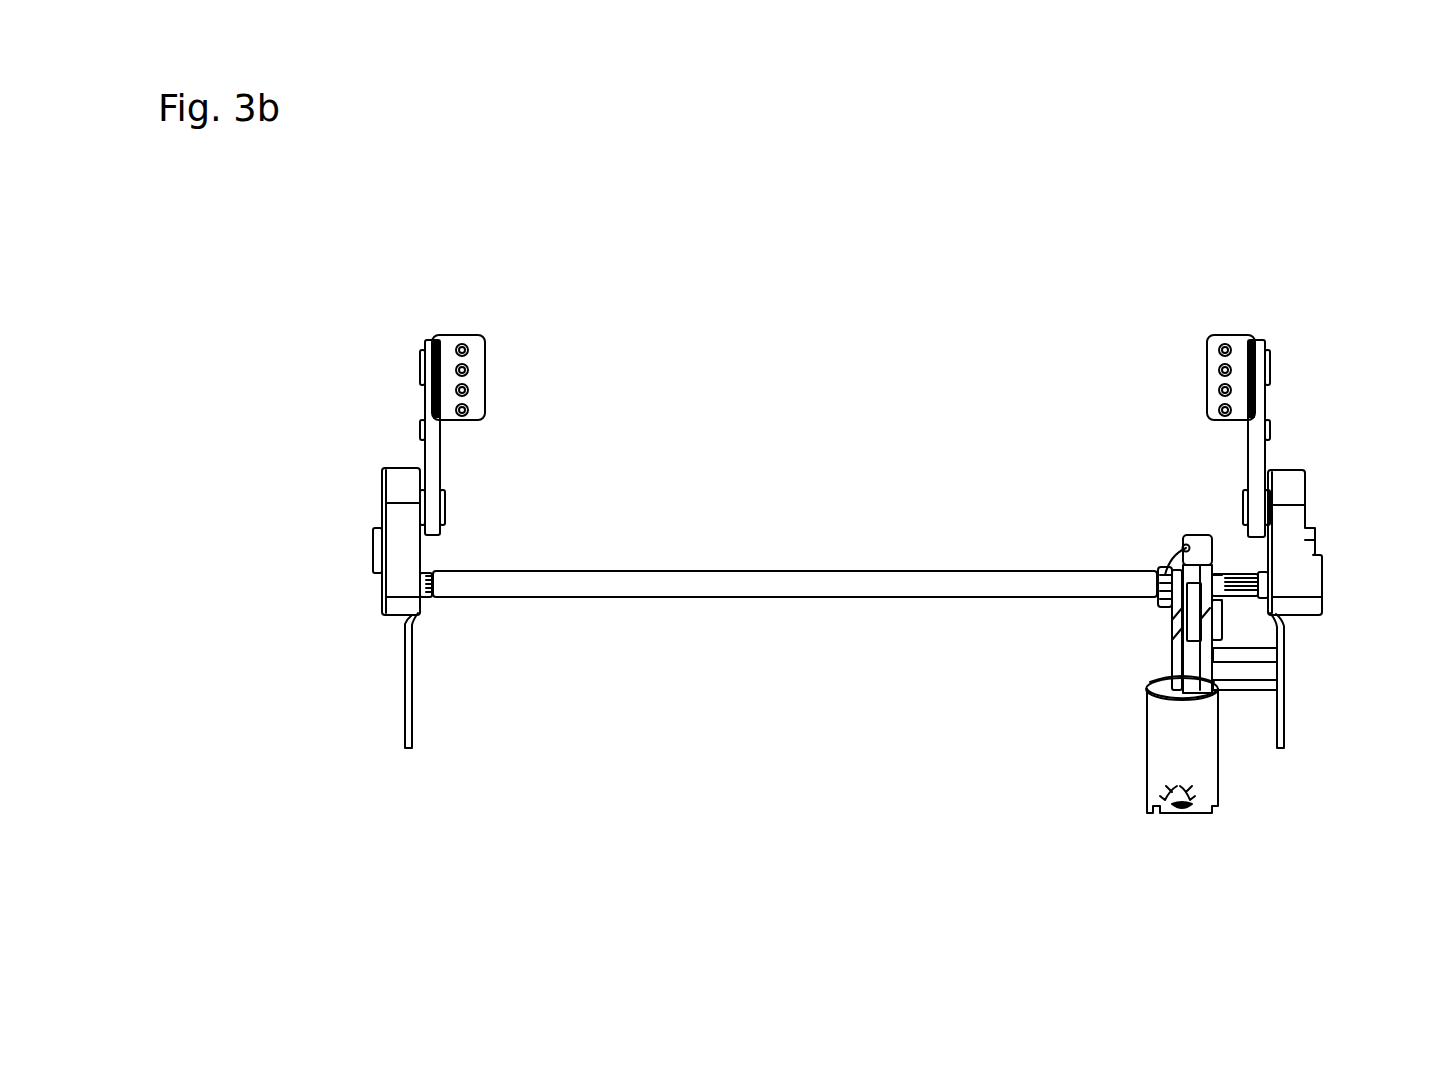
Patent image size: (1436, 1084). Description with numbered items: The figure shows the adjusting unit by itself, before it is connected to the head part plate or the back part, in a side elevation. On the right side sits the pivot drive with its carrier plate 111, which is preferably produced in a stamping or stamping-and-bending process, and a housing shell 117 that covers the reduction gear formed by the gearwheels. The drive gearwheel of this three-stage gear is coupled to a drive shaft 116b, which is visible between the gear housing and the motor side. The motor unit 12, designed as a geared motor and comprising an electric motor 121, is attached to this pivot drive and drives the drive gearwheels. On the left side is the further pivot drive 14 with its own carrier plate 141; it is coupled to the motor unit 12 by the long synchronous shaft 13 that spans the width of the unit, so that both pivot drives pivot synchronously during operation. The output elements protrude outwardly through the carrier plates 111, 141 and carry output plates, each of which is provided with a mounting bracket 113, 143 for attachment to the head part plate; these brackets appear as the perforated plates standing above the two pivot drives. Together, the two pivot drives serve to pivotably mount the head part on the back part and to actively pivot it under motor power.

The motor unit 12 is at (1140, 704).
The electric motor 121 is at (1196, 755).
The synchronous shaft 13 is at (822, 578).
The further pivot drive 14 is at (398, 544).
The carrier plate 141 is at (410, 728).
The mounting bracket 143 is at (461, 337).
The carrier plate 111 is at (1287, 735).
The mounting bracket 113 is at (1226, 337).
The drive shaft 116b is at (1247, 577).
The housing shell 117 is at (1283, 524).